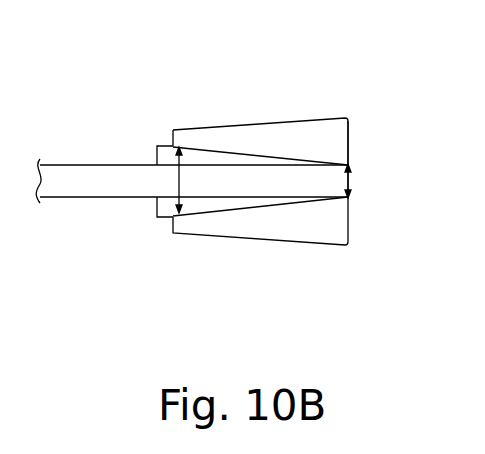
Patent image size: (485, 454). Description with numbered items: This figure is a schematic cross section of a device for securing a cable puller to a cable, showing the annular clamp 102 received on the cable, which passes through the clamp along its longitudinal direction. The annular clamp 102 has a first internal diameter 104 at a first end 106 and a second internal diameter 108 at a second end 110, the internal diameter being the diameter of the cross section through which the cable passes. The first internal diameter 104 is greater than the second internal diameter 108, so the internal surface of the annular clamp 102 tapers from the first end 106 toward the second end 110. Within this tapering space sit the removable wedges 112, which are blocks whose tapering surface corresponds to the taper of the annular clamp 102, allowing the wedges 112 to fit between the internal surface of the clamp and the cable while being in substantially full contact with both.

The annular clamp 102 is at (295, 140).
The first internal diameter 104 is at (178, 150).
The first end 106 is at (173, 130).
The second internal diameter 108 is at (350, 180).
The second end 110 is at (350, 133).
The removable wedges 112 is at (218, 150).